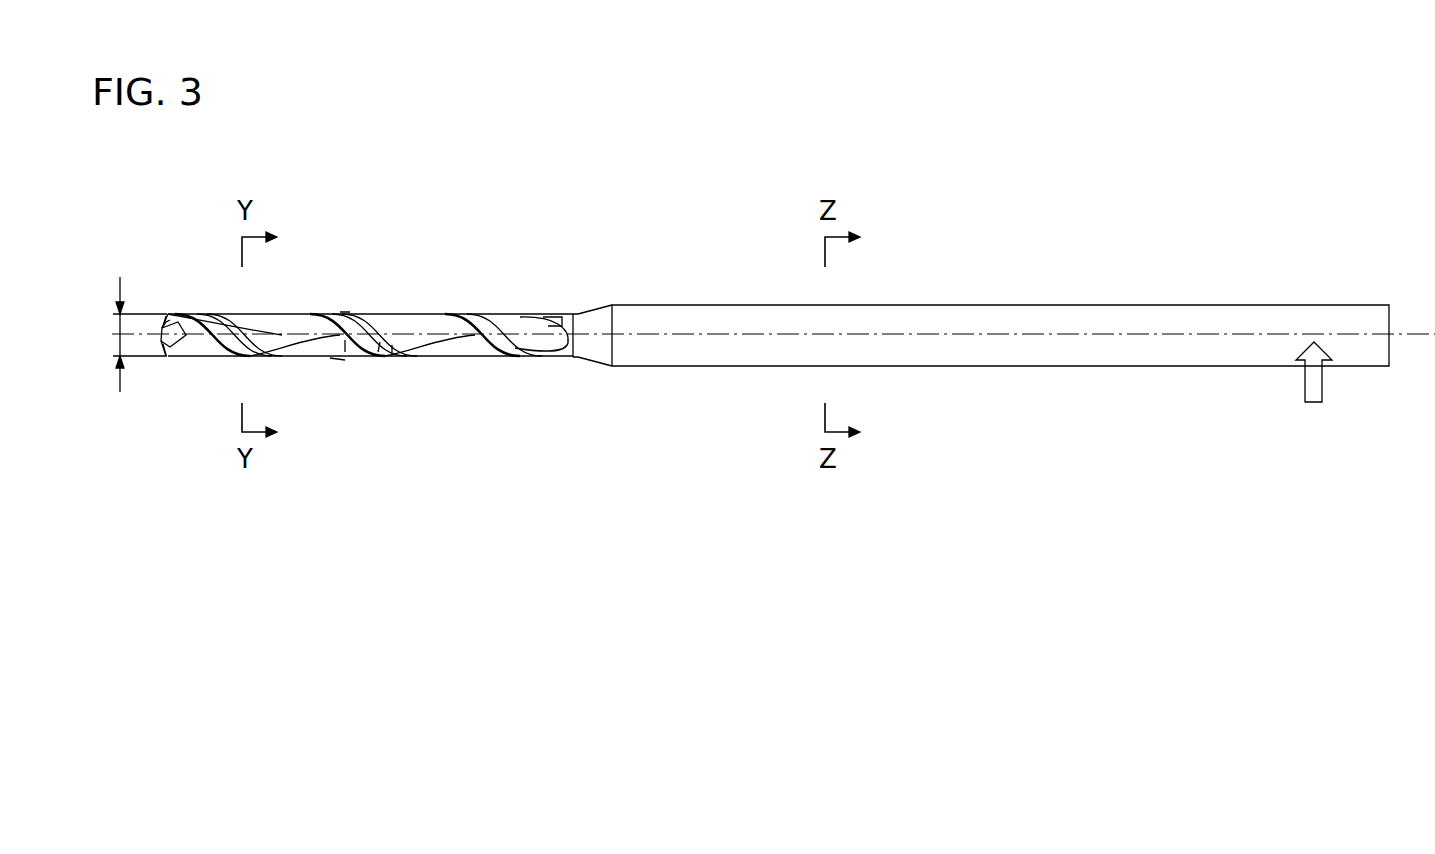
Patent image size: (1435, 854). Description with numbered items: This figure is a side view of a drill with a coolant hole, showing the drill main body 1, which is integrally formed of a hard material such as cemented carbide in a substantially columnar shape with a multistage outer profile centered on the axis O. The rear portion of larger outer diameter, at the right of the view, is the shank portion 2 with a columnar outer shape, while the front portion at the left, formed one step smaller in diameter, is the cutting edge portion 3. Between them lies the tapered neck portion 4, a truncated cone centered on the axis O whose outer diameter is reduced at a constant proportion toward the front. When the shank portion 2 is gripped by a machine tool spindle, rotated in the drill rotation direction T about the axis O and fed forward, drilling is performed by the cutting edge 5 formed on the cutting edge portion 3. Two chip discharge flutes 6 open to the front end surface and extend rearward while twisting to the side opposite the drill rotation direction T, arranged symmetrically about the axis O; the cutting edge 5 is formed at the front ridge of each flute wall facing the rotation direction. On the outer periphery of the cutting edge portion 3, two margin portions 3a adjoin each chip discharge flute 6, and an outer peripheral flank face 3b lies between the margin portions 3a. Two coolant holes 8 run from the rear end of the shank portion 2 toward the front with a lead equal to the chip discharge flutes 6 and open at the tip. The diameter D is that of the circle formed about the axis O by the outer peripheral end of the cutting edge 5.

The drill main body 1 is at (775, 250).
The shank portion 2 is at (669, 292).
The cutting edge portion 3 is at (523, 292).
The margin portion 3a is at (345, 354).
The outer peripheral flank face 3b is at (378, 356).
The tapered neck portion 4 is at (588, 292).
The cutting edge 5 is at (167, 318).
The chip discharge flute 6 is at (342, 305).
The coolant hole 8 is at (162, 323).
The diameter of the cutting edge D is at (132, 334).
The drill rotation direction T is at (1320, 372).
The axis O is at (1413, 342).